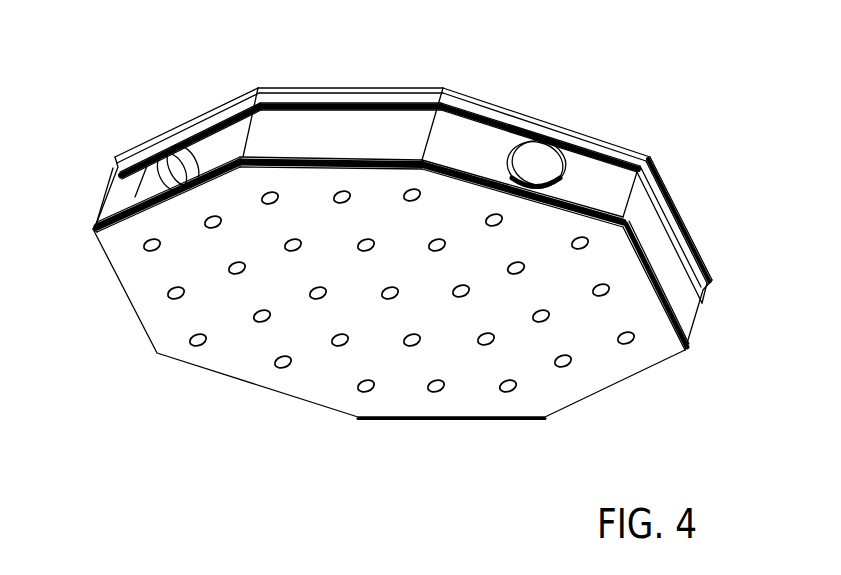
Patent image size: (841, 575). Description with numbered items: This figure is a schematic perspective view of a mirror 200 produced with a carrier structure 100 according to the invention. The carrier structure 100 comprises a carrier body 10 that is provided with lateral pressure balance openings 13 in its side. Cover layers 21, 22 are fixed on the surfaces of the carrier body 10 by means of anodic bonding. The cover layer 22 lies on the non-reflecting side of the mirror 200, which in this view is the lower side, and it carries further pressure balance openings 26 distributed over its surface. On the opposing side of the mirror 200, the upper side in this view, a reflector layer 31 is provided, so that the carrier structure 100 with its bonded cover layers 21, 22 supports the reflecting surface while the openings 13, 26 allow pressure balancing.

The carrier body 10 is at (98, 192).
The lateral pressure balance openings 13 is at (540, 157).
The cover layer 21 is at (218, 113).
The cover layer 22 is at (165, 330).
The pressure balance openings 26 is at (360, 388).
The reflector layer 31 is at (497, 98).
The carrier structure 100 is at (728, 262).
The mirror 200 is at (413, 185).